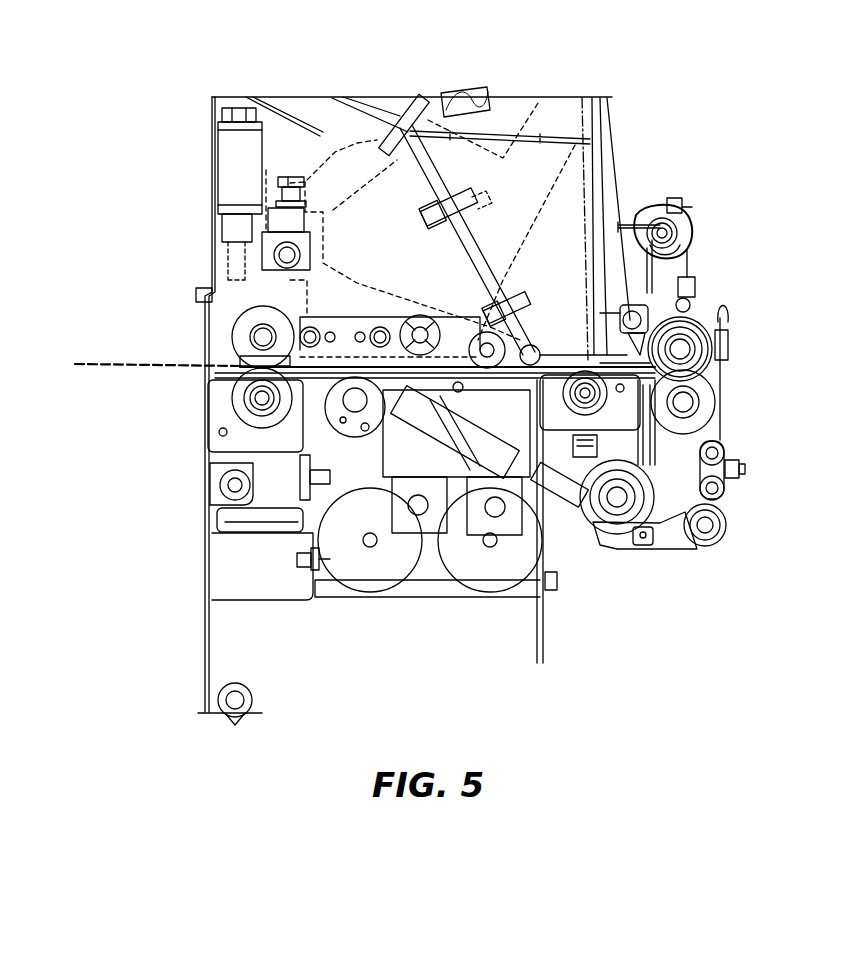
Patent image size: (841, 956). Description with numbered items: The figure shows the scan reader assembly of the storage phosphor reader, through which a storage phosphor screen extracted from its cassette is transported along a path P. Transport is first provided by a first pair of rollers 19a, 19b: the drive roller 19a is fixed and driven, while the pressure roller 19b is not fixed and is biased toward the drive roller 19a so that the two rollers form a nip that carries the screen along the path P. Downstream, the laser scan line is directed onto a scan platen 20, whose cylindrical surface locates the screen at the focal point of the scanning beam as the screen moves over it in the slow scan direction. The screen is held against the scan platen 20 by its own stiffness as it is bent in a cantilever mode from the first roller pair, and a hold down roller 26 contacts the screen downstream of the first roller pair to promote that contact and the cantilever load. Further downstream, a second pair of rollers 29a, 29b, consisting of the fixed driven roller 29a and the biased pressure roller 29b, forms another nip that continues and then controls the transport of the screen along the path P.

The path P is at (125, 370).
The pressure roller 29b is at (237, 332).
The drive roller 29a is at (240, 407).
The hold down roller 26 is at (470, 305).
The scan platen 20 is at (544, 356).
The drive roller 19a is at (700, 333).
The pressure roller 19b is at (703, 398).